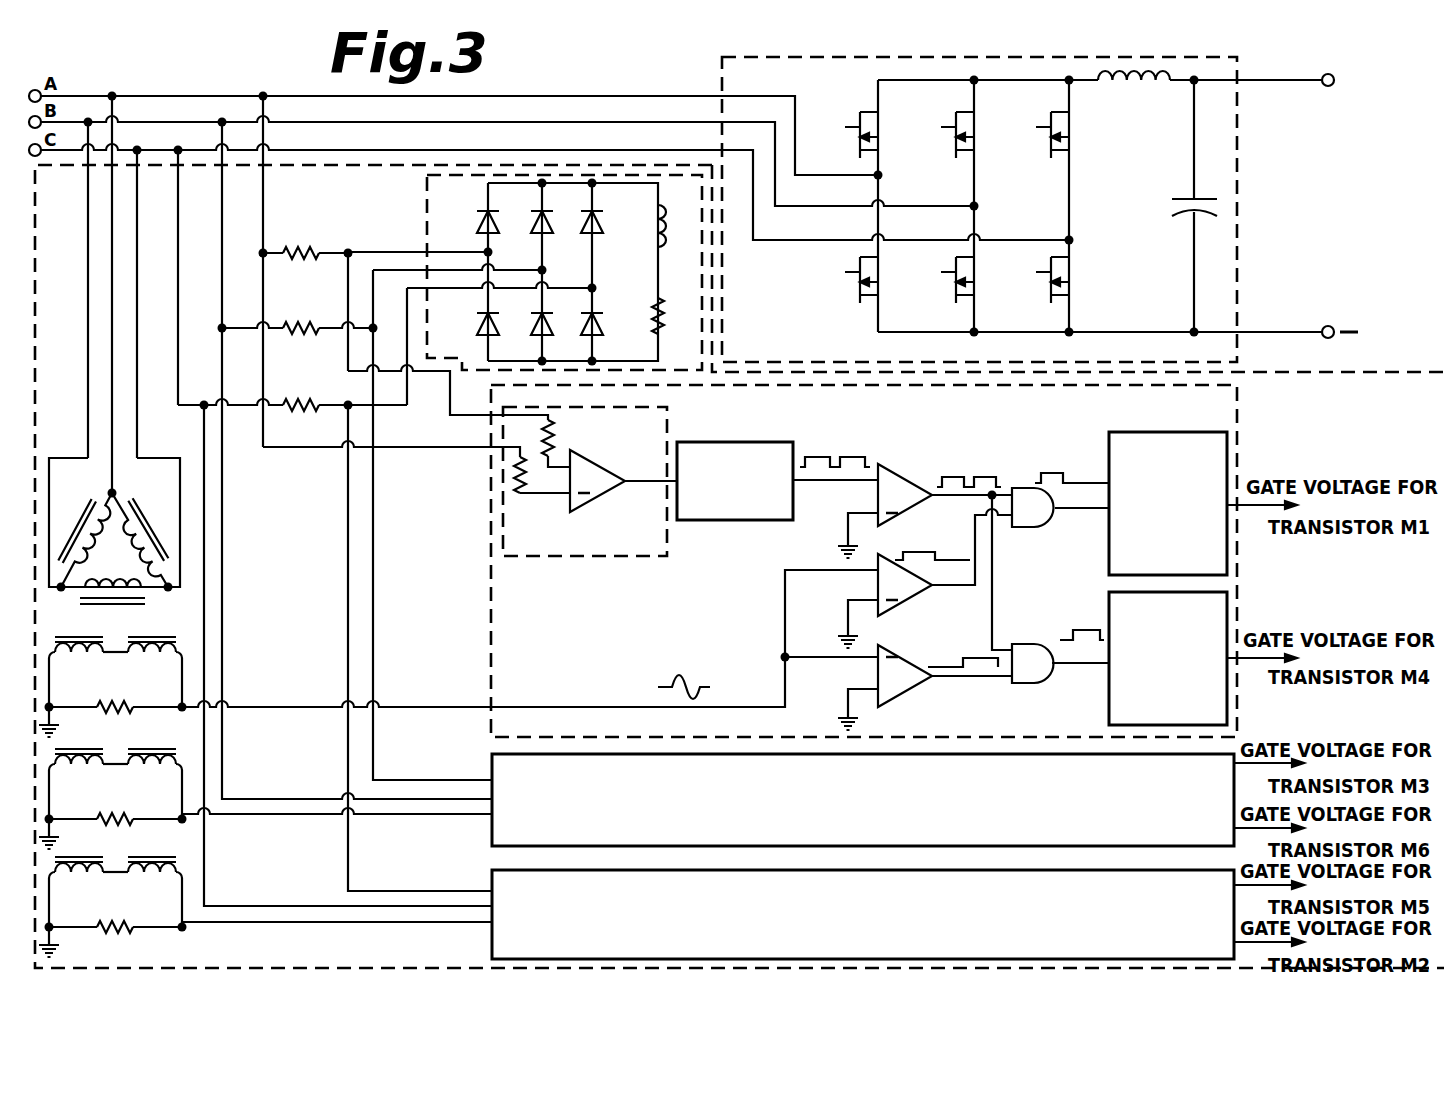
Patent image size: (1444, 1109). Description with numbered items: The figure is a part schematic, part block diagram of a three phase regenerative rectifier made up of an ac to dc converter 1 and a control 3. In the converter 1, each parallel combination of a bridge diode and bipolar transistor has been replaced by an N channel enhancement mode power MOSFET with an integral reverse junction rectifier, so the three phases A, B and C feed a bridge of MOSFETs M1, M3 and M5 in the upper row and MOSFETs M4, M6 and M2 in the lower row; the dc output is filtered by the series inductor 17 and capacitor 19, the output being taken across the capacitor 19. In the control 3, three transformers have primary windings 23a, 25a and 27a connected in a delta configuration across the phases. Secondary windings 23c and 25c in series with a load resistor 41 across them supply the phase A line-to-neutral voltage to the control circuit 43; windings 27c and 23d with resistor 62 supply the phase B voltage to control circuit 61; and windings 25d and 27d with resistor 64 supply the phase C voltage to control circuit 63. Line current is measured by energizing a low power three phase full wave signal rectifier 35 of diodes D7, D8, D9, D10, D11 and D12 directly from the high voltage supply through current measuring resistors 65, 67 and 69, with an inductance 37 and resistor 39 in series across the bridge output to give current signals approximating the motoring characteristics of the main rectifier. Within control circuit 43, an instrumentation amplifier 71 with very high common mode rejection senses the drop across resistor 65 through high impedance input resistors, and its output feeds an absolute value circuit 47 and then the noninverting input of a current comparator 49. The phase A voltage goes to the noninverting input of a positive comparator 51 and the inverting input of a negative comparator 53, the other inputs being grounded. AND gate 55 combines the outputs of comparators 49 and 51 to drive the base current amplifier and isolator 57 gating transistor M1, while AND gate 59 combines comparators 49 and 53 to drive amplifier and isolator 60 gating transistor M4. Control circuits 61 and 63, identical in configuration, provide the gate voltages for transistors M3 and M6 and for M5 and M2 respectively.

The ac to dc converter 1 is at (718, 76).
The control 3 is at (1412, 372).
The inductor 17 is at (1135, 84).
The capacitor 19 is at (1182, 194).
The primary winding 23a is at (83, 516).
The primary winding 25a is at (146, 516).
The primary winding 27a is at (130, 572).
The secondary winding 25c is at (84, 638).
The secondary winding 23c is at (141, 645).
The load resistor 41 is at (120, 690).
The secondary winding 23d is at (88, 750).
The secondary winding 27c is at (170, 750).
The resistor 62 is at (122, 807).
The secondary winding 27d is at (88, 858).
The secondary winding 25d is at (170, 858).
The resistor 64 is at (120, 906).
The three phase full wave diode bridge 35 is at (534, 272).
The inductor 37 is at (657, 211).
The resistor 39 is at (654, 330).
The diode D7 is at (476, 207).
The diode D8 is at (589, 341).
The diode D9 is at (534, 207).
The diode D10 is at (482, 336).
The diode D11 is at (589, 207).
The diode D12 is at (540, 341).
The current measuring resistor 65 is at (310, 250).
The current measuring resistor 67 is at (310, 325).
The current measuring resistor 69 is at (310, 402).
The instrumentation amplifier 71 is at (604, 556).
The absolute value circuit 47 is at (779, 442).
The current comparator 49 is at (912, 510).
The positive comparator 51 is at (878, 584).
The negative comparator 53 is at (878, 671).
The AND gate 55 is at (1050, 528).
The AND gate 59 is at (1050, 684).
The base current amplifier and isolator 57 is at (1207, 434).
The base current amplifier and isolator 60 is at (1104, 604).
The control circuit 61 is at (490, 764).
The control circuit 63 is at (490, 880).
The control circuit 43 is at (1237, 408).
The MOSFET M1 is at (860, 110).
The MOSFET M2 is at (1044, 302).
The MOSFET M3 is at (952, 112).
The MOSFET M4 is at (856, 306).
The MOSFET M5 is at (1046, 112).
The MOSFET M6 is at (954, 302).